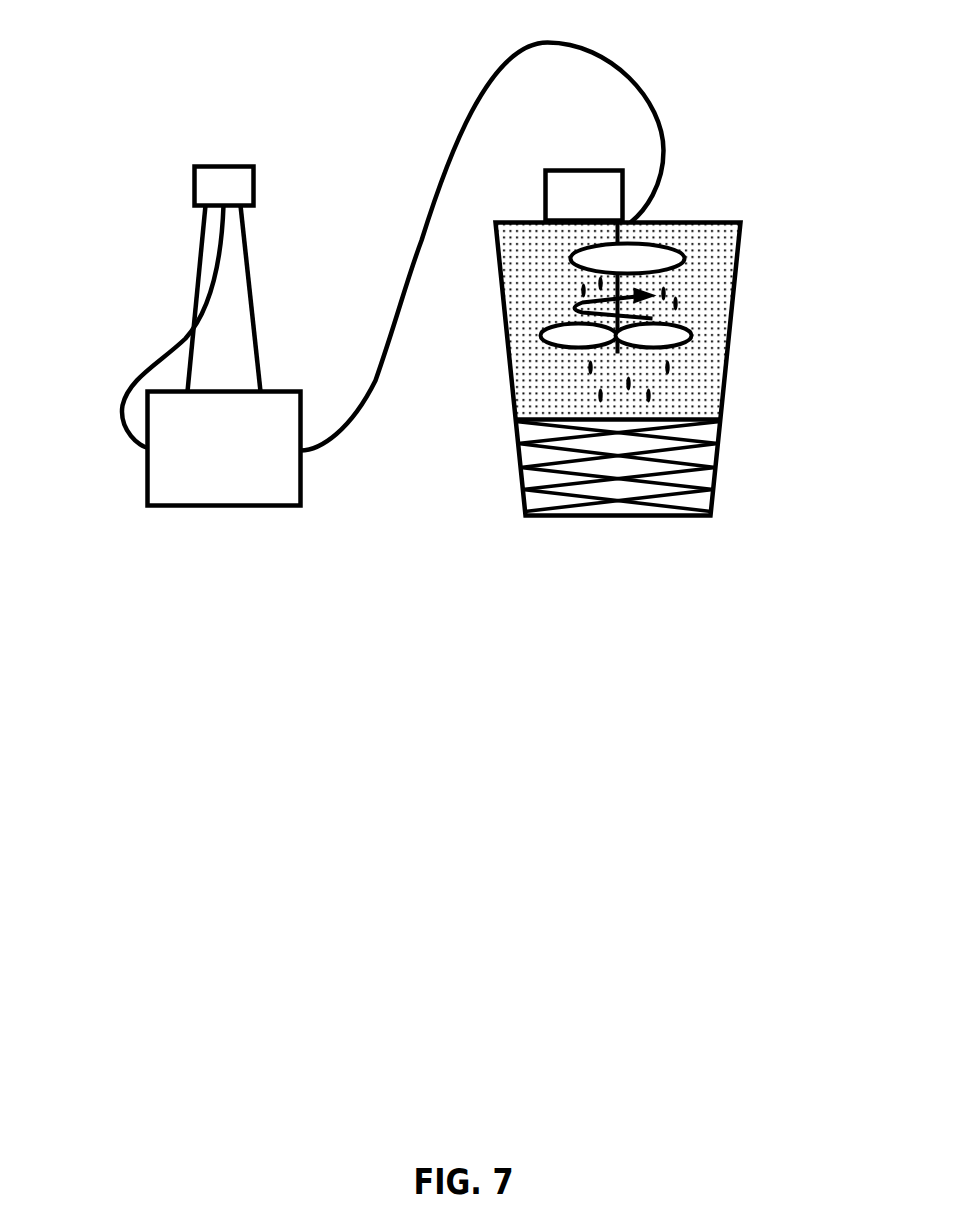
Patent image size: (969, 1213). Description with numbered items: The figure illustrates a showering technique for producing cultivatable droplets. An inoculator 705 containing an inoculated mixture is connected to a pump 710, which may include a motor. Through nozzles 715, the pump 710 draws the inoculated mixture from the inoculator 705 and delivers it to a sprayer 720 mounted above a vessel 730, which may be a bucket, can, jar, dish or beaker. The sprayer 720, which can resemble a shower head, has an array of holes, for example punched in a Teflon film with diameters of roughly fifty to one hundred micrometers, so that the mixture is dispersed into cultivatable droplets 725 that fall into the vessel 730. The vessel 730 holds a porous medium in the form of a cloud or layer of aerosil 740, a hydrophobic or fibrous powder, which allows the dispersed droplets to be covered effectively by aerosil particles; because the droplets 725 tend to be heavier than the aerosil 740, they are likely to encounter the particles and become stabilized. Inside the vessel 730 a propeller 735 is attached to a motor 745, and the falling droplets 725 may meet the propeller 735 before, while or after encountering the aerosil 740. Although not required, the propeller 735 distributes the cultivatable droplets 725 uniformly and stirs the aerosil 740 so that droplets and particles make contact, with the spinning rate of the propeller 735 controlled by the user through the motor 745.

The inoculator 705 is at (208, 163).
The pump 710 is at (224, 449).
The nozzles 715 is at (157, 355).
The sprayer 720 is at (685, 262).
The cultivatable droplets 725 is at (675, 308).
The vessel 730 is at (728, 367).
The propeller 735 is at (691, 333).
The aerosil 740 is at (693, 403).
The motor 745 is at (584, 262).